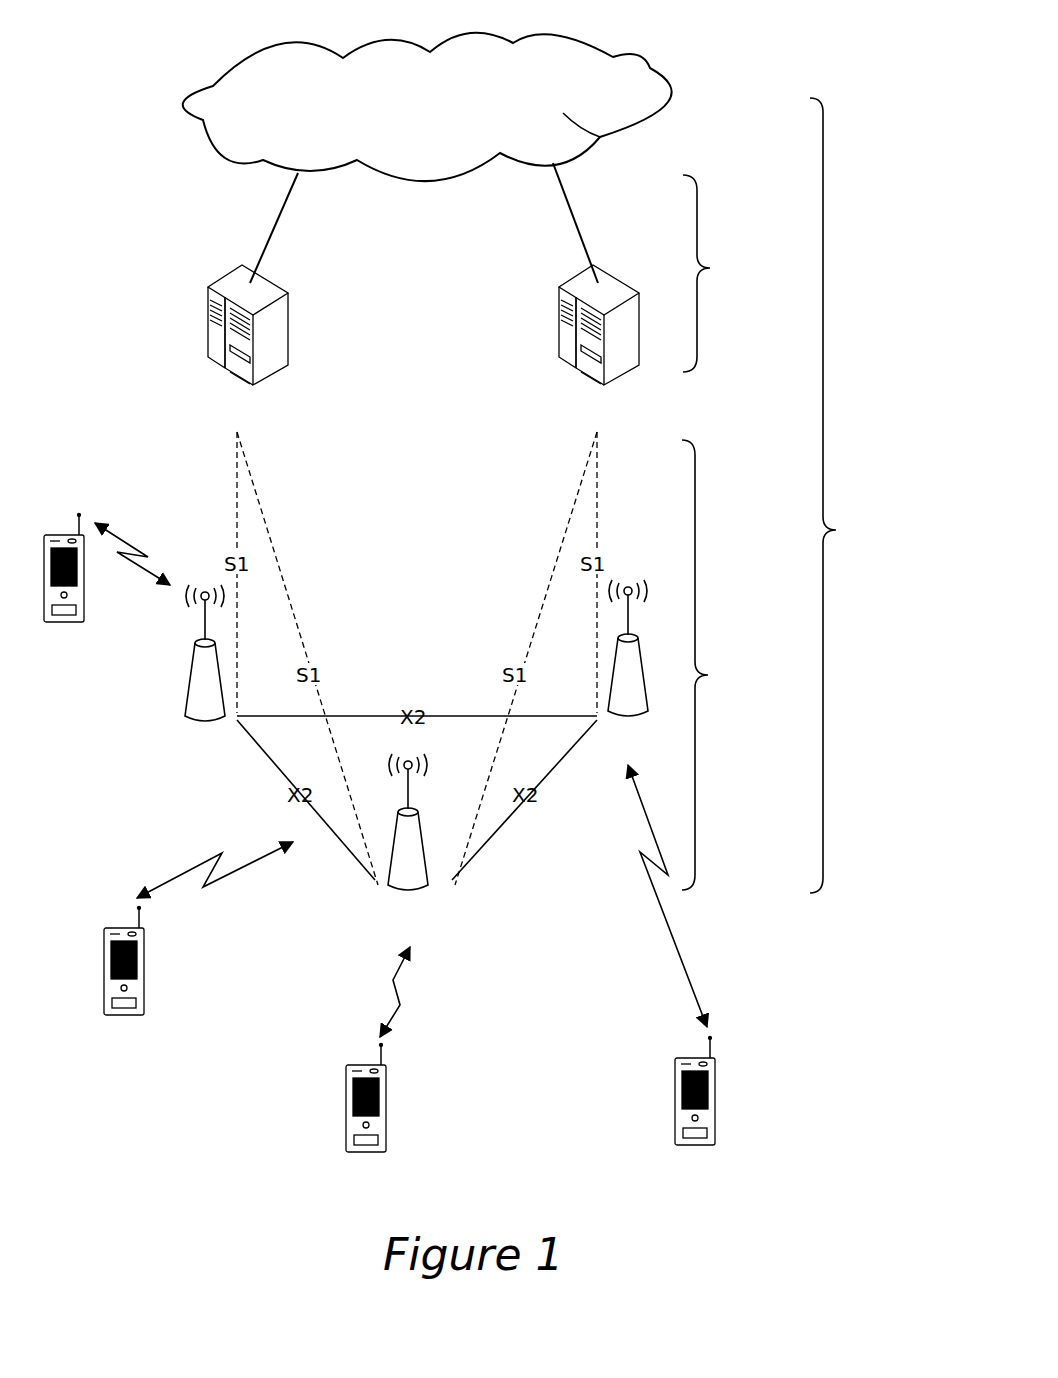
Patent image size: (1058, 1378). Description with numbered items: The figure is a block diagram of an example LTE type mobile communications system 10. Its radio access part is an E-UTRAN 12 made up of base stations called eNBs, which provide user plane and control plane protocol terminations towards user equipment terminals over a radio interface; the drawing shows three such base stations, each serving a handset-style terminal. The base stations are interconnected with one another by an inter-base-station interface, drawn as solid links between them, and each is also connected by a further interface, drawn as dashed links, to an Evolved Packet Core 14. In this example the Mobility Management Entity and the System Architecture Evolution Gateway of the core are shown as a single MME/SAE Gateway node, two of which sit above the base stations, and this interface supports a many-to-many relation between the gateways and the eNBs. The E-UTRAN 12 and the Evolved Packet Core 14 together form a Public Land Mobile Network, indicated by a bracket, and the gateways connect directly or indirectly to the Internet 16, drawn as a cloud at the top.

The LTE type mobile communications system 10 is at (105, 295).
The E-UTRAN 12 is at (744, 665).
The Evolved Packet Core 14 is at (719, 273).
The Internet 16 is at (640, 63).